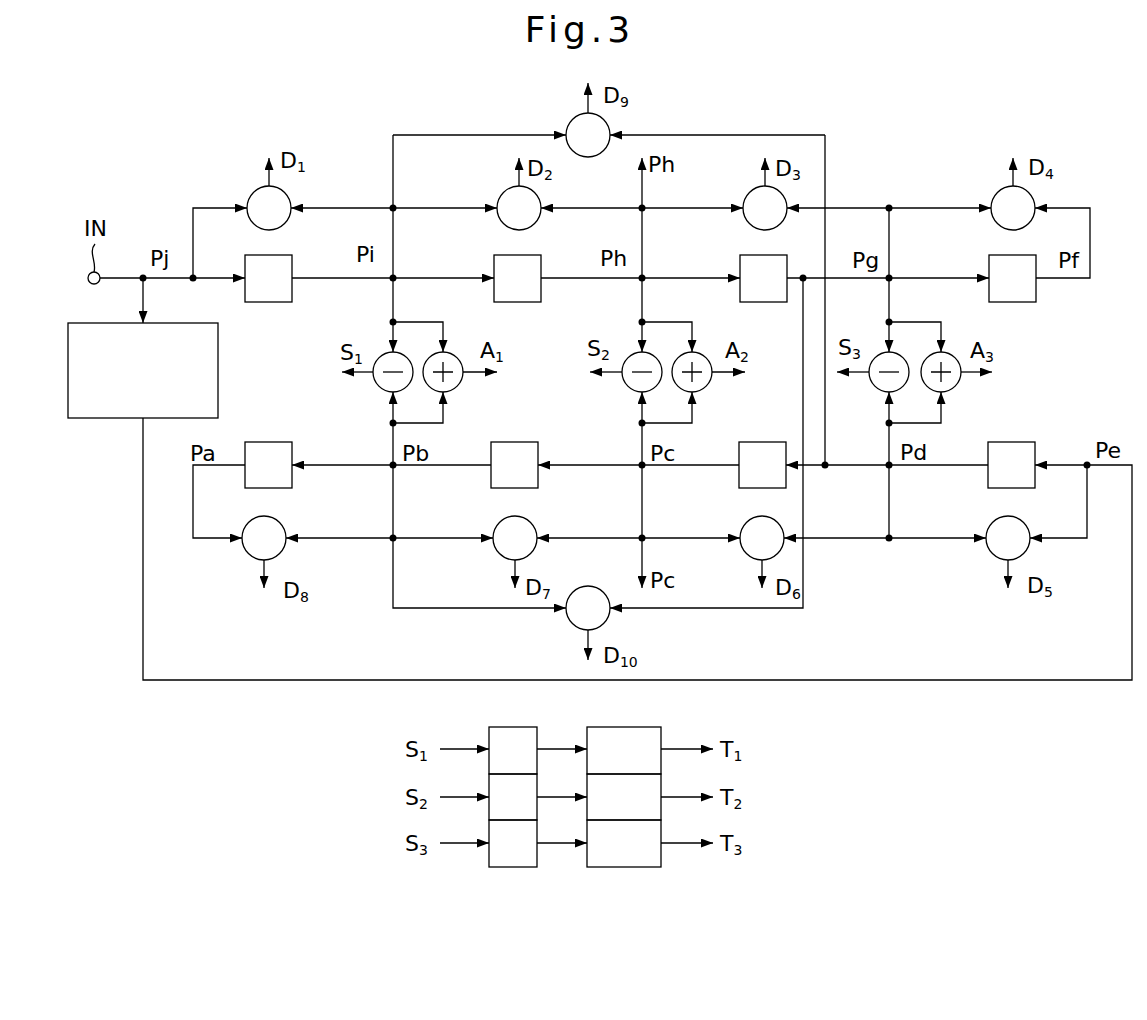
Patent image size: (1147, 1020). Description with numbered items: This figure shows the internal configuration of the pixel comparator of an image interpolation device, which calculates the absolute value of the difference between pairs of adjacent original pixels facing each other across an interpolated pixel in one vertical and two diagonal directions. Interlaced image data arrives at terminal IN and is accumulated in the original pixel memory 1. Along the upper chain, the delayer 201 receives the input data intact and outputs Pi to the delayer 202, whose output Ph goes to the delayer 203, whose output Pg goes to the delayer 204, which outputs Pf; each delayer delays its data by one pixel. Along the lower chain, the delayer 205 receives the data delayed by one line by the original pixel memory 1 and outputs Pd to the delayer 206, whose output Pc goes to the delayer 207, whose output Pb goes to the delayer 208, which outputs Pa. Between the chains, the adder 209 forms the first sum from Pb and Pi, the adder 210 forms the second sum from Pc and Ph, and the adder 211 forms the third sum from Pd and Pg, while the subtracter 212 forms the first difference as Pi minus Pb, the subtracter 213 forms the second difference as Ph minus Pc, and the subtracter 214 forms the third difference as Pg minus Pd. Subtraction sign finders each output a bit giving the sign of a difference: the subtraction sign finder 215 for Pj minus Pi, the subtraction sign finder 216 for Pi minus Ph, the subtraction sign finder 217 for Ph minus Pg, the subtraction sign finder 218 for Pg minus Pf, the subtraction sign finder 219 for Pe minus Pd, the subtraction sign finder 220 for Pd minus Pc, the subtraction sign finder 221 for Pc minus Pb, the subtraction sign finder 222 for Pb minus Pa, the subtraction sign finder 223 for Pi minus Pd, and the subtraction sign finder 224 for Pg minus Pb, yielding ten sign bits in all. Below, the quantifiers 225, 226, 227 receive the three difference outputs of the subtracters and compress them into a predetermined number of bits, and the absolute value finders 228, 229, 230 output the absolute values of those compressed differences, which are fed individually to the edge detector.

The original pixel memory 1 is at (97, 422).
The delayer 201 is at (278, 256).
The delayer 202 is at (503, 257).
The delayer 203 is at (748, 256).
The delayer 204 is at (995, 255).
The delayer 205 is at (1022, 442).
The delayer 206 is at (757, 443).
The delayer 207 is at (500, 442).
The delayer 208 is at (267, 442).
The adder 209 is at (450, 391).
The adder 210 is at (706, 388).
The adder 211 is at (956, 387).
The subtracter 212 is at (379, 388).
The subtracter 213 is at (626, 387).
The subtracter 214 is at (880, 387).
The subtraction sign finder 215 is at (287, 192).
The subtraction sign finder 216 is at (502, 193).
The subtraction sign finder 217 is at (746, 195).
The subtraction sign finder 218 is at (996, 193).
The subtraction sign finder 219 is at (998, 522).
The subtraction sign finder 220 is at (748, 522).
The subtraction sign finder 221 is at (537, 522).
The subtraction sign finder 222 is at (280, 522).
The subtraction sign finder 223 is at (568, 121).
The subtraction sign finder 224 is at (599, 592).
The quantifier 225 is at (492, 727).
The quantifier 226 is at (537, 782).
The quantifier 227 is at (497, 867).
The absolute value finder 228 is at (622, 727).
The absolute value finder 229 is at (663, 781).
The absolute value finder 230 is at (650, 867).